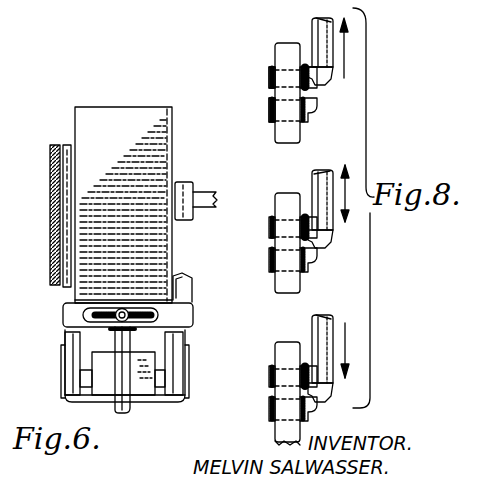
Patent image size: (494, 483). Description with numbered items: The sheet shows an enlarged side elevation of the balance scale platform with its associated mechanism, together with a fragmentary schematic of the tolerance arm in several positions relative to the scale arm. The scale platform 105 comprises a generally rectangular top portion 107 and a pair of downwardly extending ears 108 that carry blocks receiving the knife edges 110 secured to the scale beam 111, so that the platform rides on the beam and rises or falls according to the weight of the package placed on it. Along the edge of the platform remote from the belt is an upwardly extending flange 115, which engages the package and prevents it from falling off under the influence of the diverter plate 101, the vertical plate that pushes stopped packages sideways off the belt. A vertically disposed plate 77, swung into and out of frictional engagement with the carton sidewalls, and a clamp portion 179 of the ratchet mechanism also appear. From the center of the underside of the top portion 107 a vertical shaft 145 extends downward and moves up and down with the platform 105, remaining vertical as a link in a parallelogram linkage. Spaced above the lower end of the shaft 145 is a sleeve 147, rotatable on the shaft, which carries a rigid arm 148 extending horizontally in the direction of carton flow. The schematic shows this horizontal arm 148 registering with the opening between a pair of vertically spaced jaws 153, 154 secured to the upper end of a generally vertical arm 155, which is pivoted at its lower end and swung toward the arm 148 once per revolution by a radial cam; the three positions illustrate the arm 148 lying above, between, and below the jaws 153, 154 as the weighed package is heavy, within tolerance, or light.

In FIG. 6, the clamp portion 179 is at (86, 188).
In FIG. 6, the diverter plate 101 is at (47, 207).
In FIG. 6, the vertically disposed plate 77 is at (180, 220).
In FIG. 6, the upwardly extending flange 115 is at (187, 288).
In FIG. 6, the platform 105 is at (88, 300).
In FIG. 6, the top portion 107 is at (72, 317).
In FIG. 6, the scale beam 111 is at (98, 363).
In FIG. 6, the downwardly extending ears 108 is at (176, 378).
In FIG. 6, the knife edges 110 is at (77, 402).
In FIG. 6, the vertical shaft 145 is at (127, 412).
In FIG. 8, the upper jaw 153 is at (273, 78).
In FIG. 8, the lower jaw 154 is at (273, 120).
In FIG. 8, the sleeve 147 is at (334, 58).
In FIG. 8, the vertically extending arm 155 is at (285, 136).
In FIG. 8, the rigid arm 148 is at (323, 247).